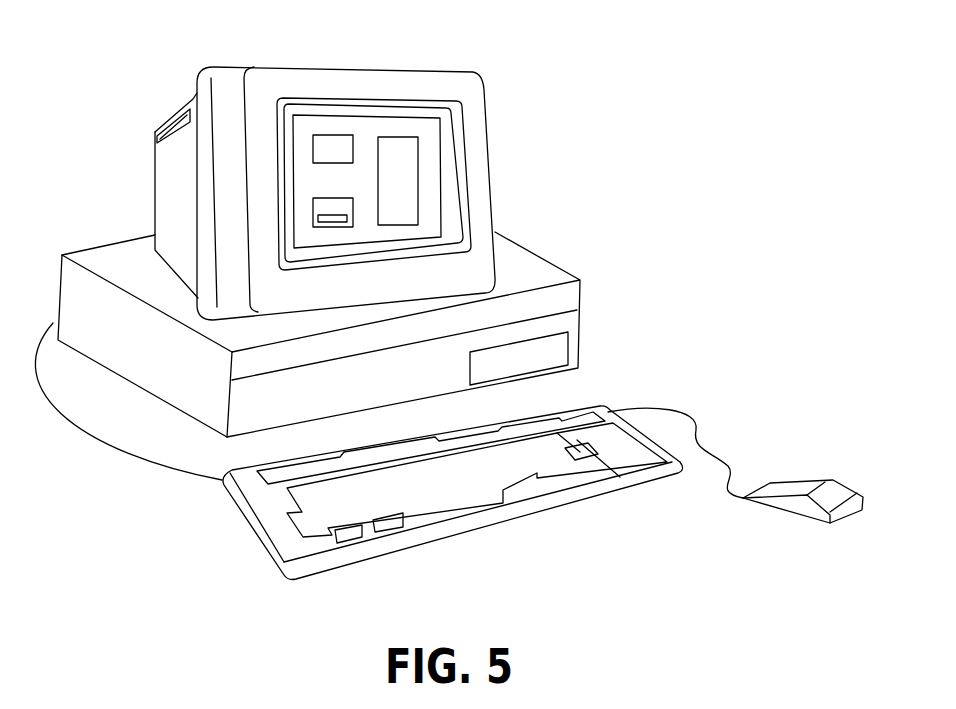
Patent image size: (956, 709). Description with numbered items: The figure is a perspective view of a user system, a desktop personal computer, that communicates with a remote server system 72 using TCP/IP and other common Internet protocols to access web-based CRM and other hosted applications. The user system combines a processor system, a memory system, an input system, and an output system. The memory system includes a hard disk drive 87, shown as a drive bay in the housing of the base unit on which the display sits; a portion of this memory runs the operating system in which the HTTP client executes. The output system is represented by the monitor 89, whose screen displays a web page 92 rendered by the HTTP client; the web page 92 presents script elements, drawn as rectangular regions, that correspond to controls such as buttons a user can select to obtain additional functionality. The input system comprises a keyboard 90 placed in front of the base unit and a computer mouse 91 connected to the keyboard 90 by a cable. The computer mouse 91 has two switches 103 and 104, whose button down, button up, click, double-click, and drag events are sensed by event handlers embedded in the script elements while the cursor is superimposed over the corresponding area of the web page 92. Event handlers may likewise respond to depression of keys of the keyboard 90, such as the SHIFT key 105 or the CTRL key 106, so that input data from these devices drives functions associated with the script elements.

The server system 72 is at (582, 97).
The hard disk drive 87 is at (540, 357).
The monitor 89 is at (488, 145).
The keyboard 90 is at (453, 514).
The computer mouse 91 is at (810, 511).
The web page 92 is at (427, 125).
The switch 103 is at (822, 497).
The switch 104 is at (842, 490).
The SHIFT key 105 is at (355, 533).
The CTRL key 106 is at (388, 523).